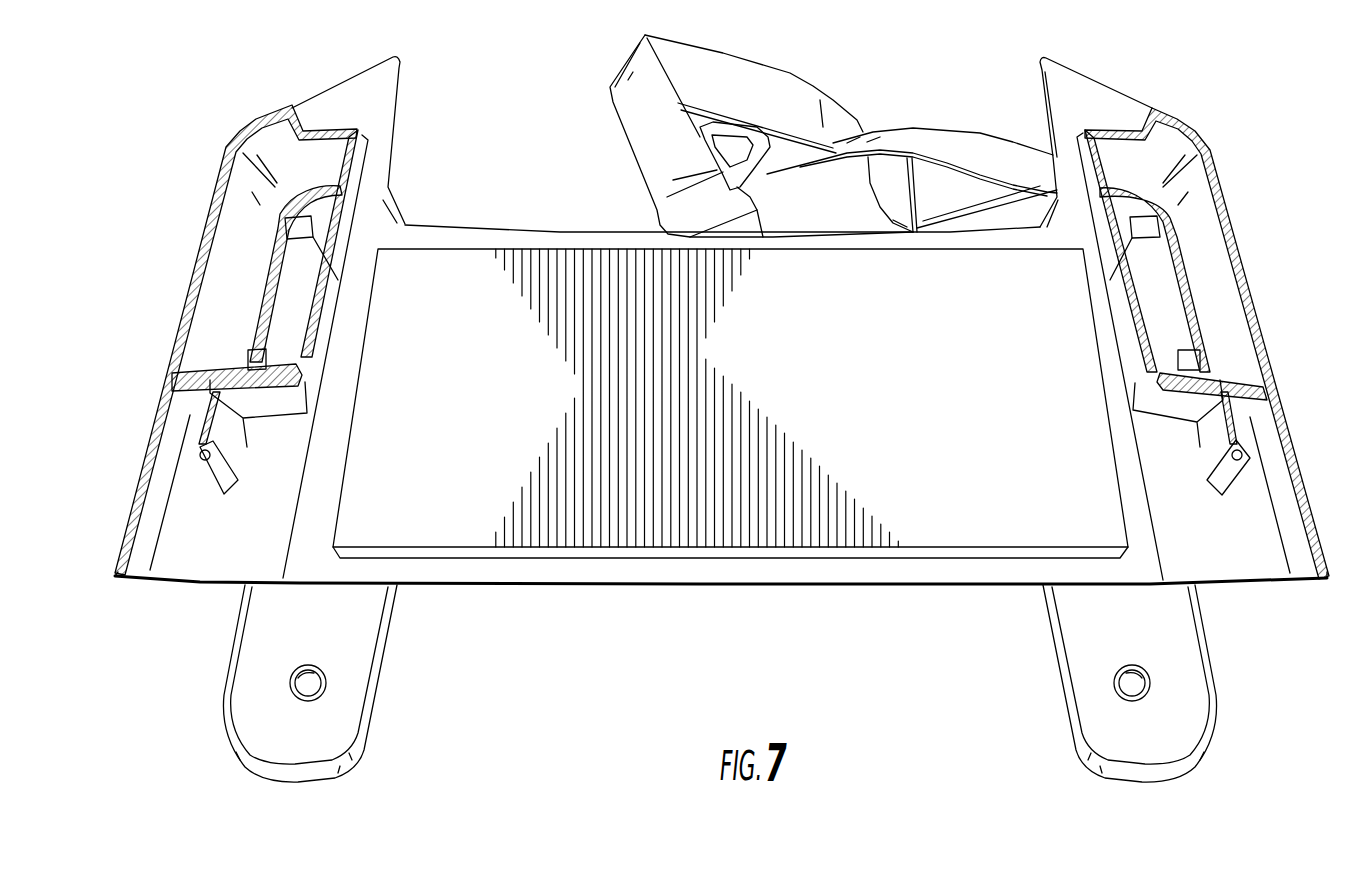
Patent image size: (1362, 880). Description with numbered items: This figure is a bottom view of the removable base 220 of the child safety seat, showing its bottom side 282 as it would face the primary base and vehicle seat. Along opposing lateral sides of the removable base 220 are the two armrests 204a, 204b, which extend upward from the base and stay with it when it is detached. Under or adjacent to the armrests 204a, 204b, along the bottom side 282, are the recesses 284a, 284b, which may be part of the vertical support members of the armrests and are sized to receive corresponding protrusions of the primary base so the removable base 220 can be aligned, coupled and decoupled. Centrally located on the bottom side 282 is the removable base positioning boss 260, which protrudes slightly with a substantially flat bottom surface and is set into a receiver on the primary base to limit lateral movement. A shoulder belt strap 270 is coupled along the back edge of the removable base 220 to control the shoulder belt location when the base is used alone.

The removable base 220 is at (666, 558).
The removable base positioning boss 260 is at (457, 518).
The shoulder belt strap 270 is at (757, 80).
The bottom side 282 is at (183, 502).
The recess 284a is at (1180, 250).
The recess 284b is at (256, 290).
The armrest 204a is at (1088, 694).
The armrest 204b is at (250, 692).